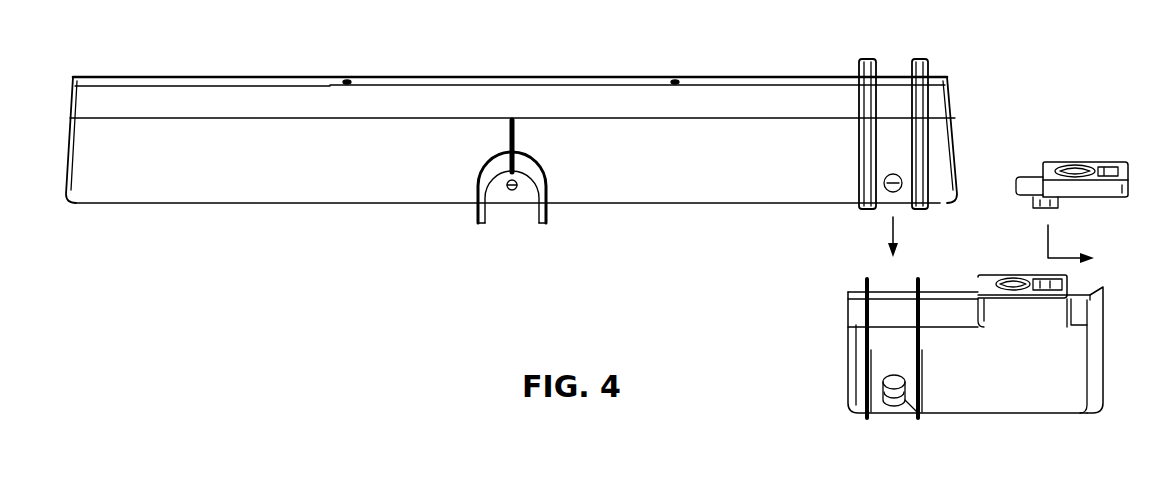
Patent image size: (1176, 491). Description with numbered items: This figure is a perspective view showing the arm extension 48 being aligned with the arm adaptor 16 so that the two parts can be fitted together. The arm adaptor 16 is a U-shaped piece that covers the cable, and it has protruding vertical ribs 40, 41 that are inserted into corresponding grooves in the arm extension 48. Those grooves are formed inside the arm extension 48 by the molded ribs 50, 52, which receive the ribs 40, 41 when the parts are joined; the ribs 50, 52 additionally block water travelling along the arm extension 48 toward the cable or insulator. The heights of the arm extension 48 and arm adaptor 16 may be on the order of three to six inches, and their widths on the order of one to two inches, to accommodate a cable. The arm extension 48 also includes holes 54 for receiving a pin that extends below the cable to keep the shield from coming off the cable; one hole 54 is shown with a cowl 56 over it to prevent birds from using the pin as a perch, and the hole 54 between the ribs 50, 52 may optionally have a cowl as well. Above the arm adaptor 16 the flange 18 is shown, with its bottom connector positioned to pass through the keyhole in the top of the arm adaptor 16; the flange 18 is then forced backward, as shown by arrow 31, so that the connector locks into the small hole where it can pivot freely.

The arm adaptor 16 is at (946, 413).
The flange 18 is at (1120, 162).
The arrow 31 is at (1062, 256).
The vertical rib 40 is at (865, 282).
The vertical rib 41 is at (918, 278).
The arm extension 48 is at (738, 78).
The molded rib 50 is at (866, 59).
The molded rib 52 is at (921, 59).
The hole 54 is at (517, 191).
The cowl 56 is at (478, 205).